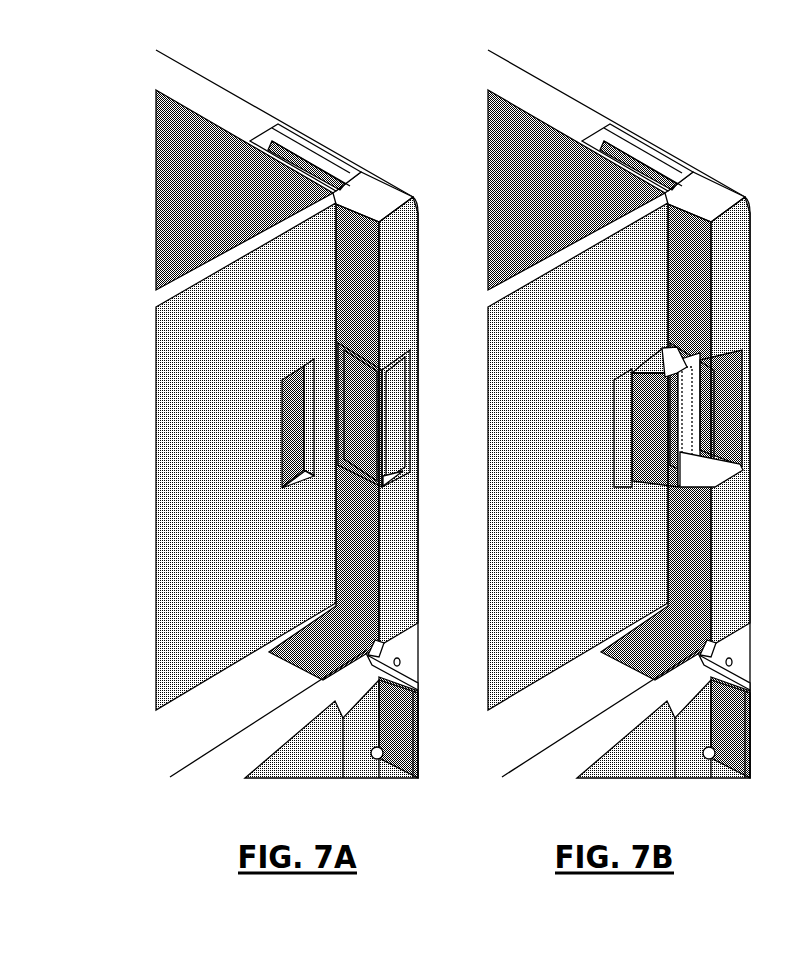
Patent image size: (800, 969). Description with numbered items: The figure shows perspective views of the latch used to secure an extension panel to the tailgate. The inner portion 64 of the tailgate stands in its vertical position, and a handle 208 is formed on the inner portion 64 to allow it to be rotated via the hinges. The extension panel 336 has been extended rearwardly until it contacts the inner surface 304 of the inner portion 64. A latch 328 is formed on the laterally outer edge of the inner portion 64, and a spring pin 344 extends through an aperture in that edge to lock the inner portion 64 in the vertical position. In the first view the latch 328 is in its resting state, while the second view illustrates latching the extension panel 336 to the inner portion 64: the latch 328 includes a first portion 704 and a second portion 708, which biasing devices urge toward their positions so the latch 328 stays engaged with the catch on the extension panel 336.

In FIG. 7A, the inner portion 64 is at (396, 553).
In FIG. 7A, the handle 208 is at (307, 140).
In FIG. 7A, the inner surface 304 is at (204, 184).
In FIG. 7A, the latch 328 is at (372, 415).
In FIG. 7A, the extension panel 336 is at (284, 583).
In FIG. 7A, the spring pin 344 is at (380, 652).
In FIG. 7B, the first portion 704 is at (618, 402).
In FIG. 7B, the second portion 708 is at (731, 303).